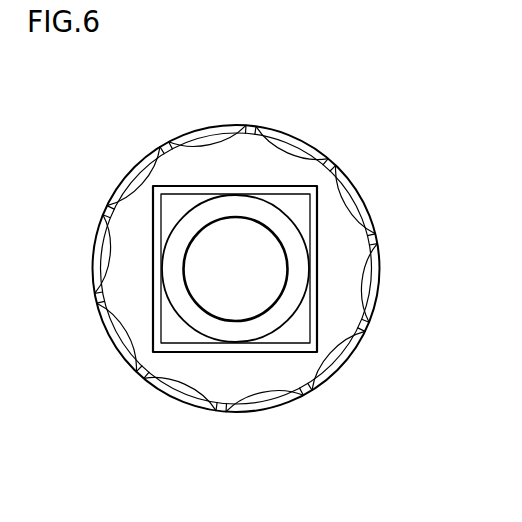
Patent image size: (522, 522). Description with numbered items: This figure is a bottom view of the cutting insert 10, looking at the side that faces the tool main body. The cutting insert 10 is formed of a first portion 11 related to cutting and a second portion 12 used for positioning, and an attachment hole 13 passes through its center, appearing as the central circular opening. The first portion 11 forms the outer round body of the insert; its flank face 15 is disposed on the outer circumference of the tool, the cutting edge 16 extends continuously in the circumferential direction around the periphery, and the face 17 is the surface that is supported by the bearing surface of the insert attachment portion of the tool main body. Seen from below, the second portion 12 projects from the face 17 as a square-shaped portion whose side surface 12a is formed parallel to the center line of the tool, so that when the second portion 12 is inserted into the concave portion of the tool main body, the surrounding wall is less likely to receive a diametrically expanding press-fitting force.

The cutting insert 10 is at (275, 130).
The first portion 11 is at (342, 367).
The second portion 12 is at (287, 352).
The side surface 12a is at (152, 242).
The attachment hole 13 is at (266, 241).
The flank face 15 is at (198, 402).
The cutting edge 16 is at (353, 185).
The face 17 is at (230, 158).